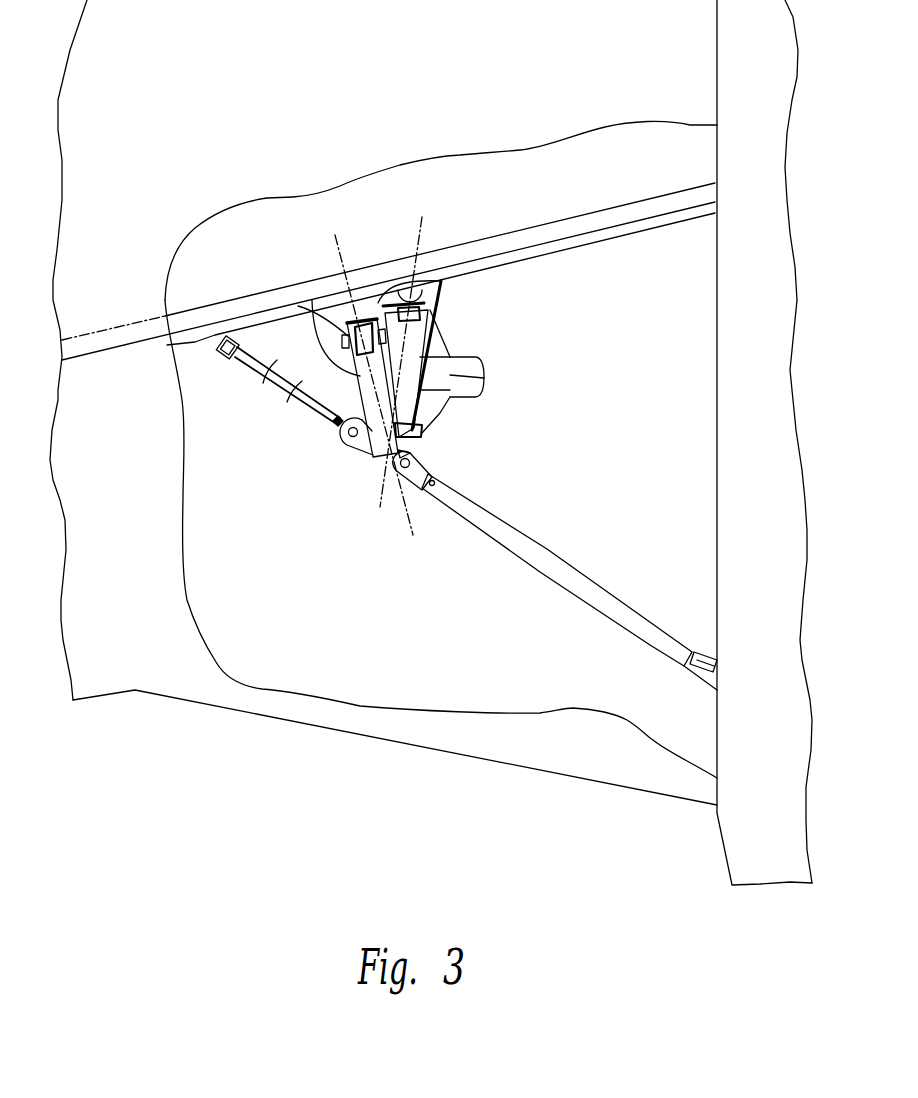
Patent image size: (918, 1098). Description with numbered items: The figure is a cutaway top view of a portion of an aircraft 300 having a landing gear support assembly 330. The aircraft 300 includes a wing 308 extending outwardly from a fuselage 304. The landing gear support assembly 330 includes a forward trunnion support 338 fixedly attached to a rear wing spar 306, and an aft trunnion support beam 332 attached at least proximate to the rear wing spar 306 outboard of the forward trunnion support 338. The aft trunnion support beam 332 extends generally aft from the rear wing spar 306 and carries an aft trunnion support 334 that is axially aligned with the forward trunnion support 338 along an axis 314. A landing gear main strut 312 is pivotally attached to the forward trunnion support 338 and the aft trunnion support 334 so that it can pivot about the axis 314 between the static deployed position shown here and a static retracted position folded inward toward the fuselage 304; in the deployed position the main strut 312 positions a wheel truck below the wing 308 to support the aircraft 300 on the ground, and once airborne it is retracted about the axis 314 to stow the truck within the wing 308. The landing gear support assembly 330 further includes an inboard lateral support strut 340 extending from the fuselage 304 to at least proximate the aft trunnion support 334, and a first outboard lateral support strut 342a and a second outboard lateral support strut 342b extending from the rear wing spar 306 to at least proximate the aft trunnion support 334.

The aircraft 300 is at (219, 737).
The fuselage 304 is at (720, 847).
The rear wing spar 306 is at (622, 201).
The wing 308 is at (98, 700).
The landing gear main strut 312 is at (440, 437).
The axis 314 is at (484, 383).
The landing gear support assembly 330 is at (343, 461).
The aft trunnion support beam 332 is at (348, 320).
The aft trunnion support 334 is at (405, 454).
The forward trunnion support 338 is at (447, 305).
The inboard lateral support strut 340 is at (561, 587).
The first outboard lateral support strut 342a is at (306, 407).
The second outboard lateral support strut 342b is at (282, 388).